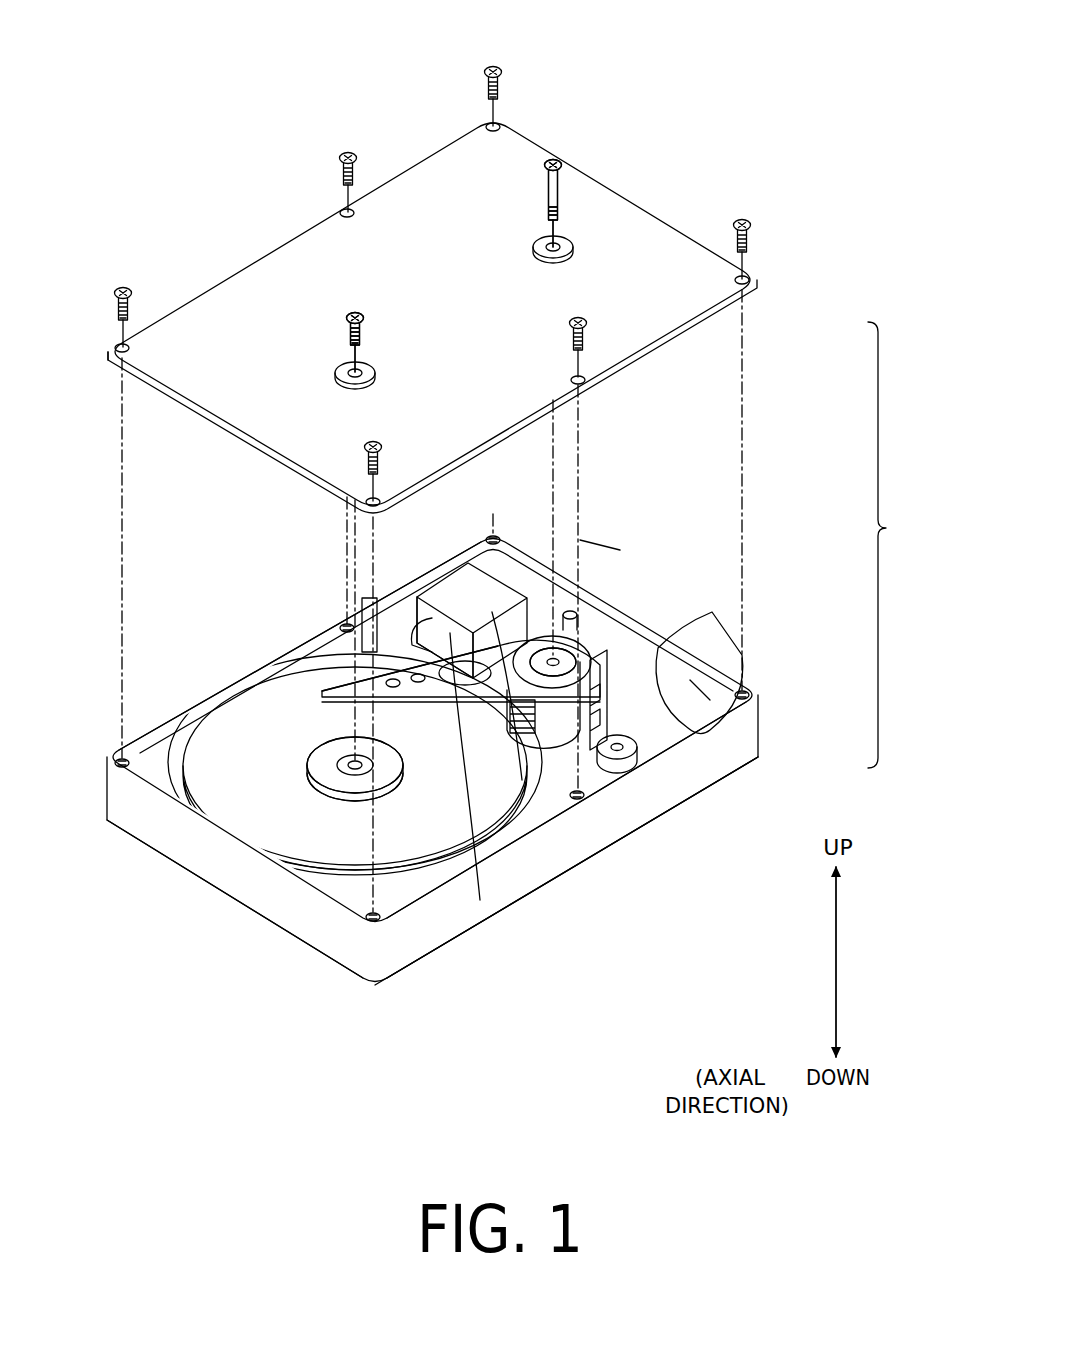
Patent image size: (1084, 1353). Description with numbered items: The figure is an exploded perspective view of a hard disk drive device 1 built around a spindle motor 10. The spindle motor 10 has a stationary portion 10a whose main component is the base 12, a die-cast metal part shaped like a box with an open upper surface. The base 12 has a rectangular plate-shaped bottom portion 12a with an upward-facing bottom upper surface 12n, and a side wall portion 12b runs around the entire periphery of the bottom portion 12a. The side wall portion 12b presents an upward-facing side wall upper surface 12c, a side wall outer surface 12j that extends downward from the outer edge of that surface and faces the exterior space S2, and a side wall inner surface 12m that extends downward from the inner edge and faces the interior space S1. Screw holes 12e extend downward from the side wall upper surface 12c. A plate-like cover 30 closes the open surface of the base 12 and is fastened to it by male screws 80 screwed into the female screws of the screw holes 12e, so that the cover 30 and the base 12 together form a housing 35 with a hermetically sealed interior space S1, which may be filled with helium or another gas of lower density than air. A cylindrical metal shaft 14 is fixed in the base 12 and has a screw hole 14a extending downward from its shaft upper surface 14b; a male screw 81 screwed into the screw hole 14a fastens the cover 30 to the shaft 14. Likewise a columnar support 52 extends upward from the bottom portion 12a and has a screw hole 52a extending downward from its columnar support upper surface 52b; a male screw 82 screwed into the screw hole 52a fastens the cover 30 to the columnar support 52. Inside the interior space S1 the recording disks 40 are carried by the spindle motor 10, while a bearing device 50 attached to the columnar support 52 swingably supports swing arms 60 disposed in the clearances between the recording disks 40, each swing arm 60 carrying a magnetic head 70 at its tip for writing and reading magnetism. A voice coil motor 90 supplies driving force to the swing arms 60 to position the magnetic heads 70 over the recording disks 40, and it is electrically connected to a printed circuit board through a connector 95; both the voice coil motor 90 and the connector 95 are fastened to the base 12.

The hard disk drive device 1 is at (158, 155).
The spindle motor 10 is at (277, 847).
The stationary portion 10a is at (488, 744).
The base 12 is at (765, 719).
The bottom portion 12a is at (563, 855).
The side wall portion 12b is at (277, 643).
The side wall upper surface 12c is at (347, 897).
The screw holes 12e is at (497, 530).
The side wall outer surface 12j is at (608, 827).
The side wall inner surface 12m is at (497, 572).
The bottom upper surface 12n is at (637, 767).
The shaft 14 is at (343, 752).
The screw hole 14a is at (352, 752).
The shaft upper surface 14b is at (318, 778).
The cover 30 is at (763, 292).
The housing 35 is at (897, 545).
The recording disks 40 is at (412, 846).
The bearing device 50 is at (552, 755).
The columnar support 52 is at (565, 648).
The screw hole 52a is at (545, 648).
The columnar support upper surface 52b is at (450, 633).
The swing arms 60 is at (417, 632).
The magnetic heads 70 is at (525, 667).
The male screws 80 is at (740, 218).
The male screw 81 is at (348, 320).
The male screw 82 is at (558, 193).
The voice coil motor 90 is at (660, 663).
The connector 95 is at (595, 765).
The interior space S1 is at (700, 688).
The exterior space S2 is at (599, 542).